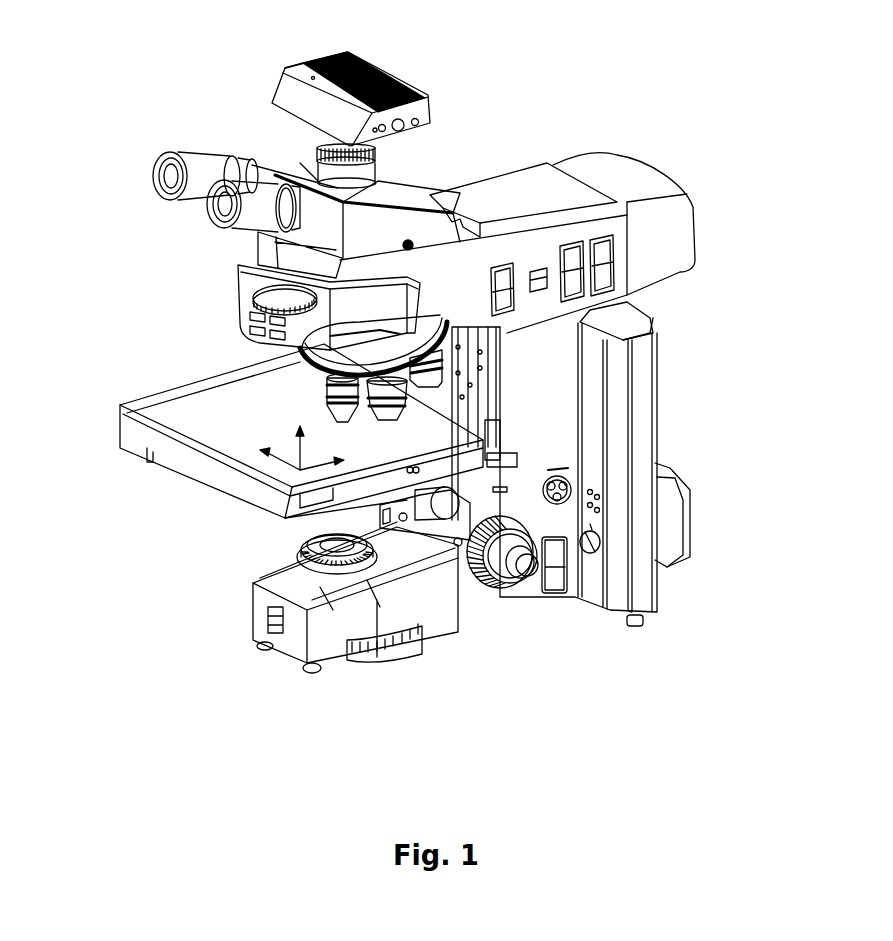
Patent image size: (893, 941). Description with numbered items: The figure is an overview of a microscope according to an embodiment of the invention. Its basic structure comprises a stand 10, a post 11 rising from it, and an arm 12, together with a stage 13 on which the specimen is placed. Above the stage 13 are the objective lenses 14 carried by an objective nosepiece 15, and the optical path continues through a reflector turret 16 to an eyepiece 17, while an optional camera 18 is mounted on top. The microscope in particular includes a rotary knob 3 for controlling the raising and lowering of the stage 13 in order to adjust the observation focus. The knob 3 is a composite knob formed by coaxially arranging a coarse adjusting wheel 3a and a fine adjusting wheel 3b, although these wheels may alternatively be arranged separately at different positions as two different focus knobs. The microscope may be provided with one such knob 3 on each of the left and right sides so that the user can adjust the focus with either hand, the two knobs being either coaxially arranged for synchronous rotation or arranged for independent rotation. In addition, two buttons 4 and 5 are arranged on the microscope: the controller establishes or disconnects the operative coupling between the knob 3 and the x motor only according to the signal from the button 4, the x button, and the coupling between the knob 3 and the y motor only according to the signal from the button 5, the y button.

The camera 18 is at (298, 98).
The eyepiece 17 is at (170, 168).
The reflector turret 16 is at (268, 294).
The objective nosepiece 15 is at (345, 366).
The objective lenses 14 is at (340, 394).
The stage 13 is at (198, 457).
The arm 12 is at (522, 252).
The post 11 is at (550, 428).
The stand 10 is at (428, 607).
The button 5 is at (377, 521).
The button 4 is at (458, 546).
The knob 3 is at (357, 626).
The coarse adjusting wheel 3a is at (487, 575).
The fine adjusting wheel 3b is at (528, 566).